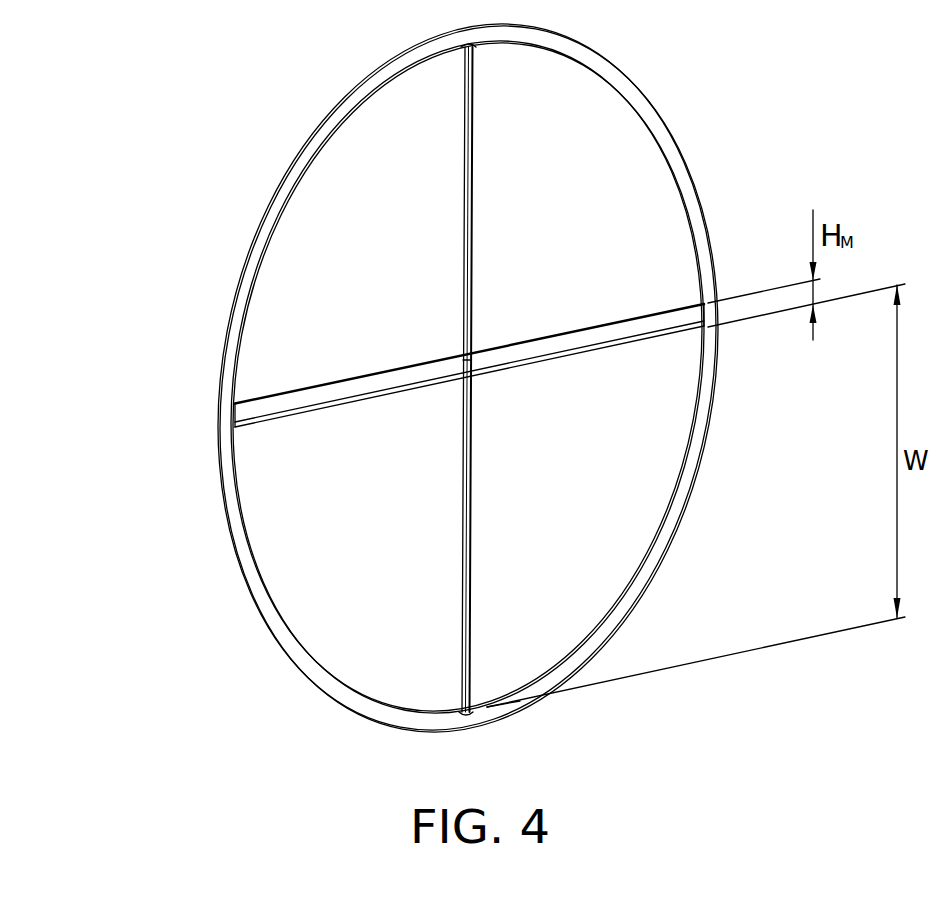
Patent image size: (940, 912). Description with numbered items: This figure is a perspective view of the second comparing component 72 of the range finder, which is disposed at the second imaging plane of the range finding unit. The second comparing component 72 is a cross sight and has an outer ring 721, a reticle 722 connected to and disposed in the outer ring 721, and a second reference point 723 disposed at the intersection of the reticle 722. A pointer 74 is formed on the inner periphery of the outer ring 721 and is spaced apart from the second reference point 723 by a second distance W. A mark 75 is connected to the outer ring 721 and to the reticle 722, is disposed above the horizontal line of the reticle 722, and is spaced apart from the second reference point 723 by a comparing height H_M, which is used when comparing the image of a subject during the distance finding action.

The second comparing component 72 is at (408, 387).
The outer ring 721 is at (268, 222).
The reticle 722 is at (463, 521).
The second reference point 723 is at (463, 383).
The pointer 74 is at (486, 707).
The mark 75 is at (568, 330).